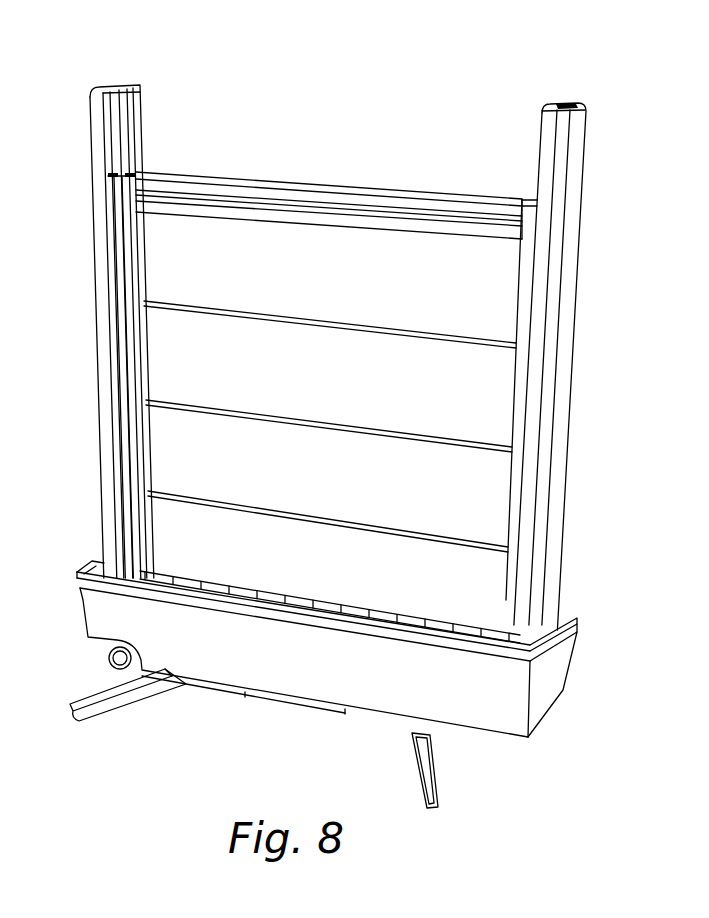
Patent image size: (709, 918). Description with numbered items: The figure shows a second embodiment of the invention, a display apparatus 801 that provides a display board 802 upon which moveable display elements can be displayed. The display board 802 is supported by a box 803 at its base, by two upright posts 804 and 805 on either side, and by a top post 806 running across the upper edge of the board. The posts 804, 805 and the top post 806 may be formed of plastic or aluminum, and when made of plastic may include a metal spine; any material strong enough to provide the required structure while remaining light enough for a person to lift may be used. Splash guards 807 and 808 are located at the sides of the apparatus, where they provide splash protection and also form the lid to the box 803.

The display apparatus 801 is at (382, 93).
The display board 802 is at (365, 232).
The box 803 is at (268, 688).
The post 804 is at (128, 170).
The post 805 is at (533, 202).
The top post 806 is at (262, 188).
The splash guard 807 is at (93, 143).
The splash guard 808 is at (572, 291).